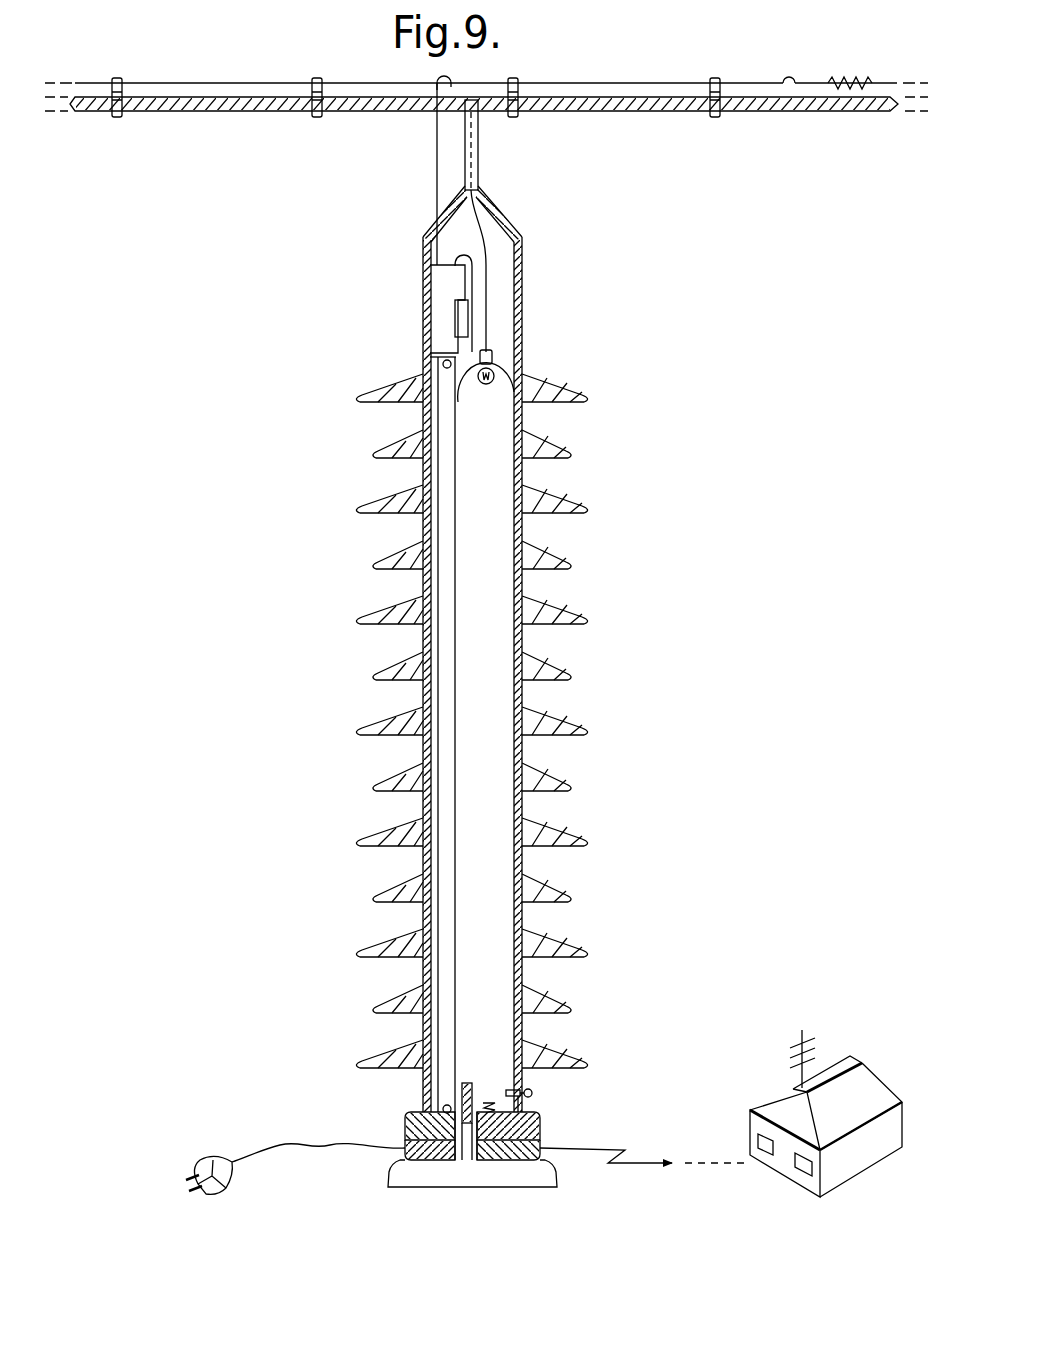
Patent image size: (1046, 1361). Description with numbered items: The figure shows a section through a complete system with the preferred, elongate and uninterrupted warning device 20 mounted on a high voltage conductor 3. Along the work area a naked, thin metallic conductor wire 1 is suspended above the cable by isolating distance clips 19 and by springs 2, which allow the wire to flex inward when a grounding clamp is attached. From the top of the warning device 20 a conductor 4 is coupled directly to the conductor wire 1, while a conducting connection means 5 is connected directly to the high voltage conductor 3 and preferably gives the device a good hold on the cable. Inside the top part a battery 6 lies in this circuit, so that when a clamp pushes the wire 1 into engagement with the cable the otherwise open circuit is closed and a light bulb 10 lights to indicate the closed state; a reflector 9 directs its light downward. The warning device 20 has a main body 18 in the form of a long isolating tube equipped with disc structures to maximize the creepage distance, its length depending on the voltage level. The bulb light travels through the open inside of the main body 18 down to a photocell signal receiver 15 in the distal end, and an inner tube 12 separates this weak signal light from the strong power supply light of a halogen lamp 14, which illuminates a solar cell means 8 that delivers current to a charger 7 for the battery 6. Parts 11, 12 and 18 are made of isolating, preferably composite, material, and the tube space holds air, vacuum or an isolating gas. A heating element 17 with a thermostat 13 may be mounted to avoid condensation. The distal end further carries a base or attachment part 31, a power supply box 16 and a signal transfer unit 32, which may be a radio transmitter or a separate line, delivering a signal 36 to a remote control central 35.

The conductor wire 1 is at (636, 83).
The spring 2 is at (838, 77).
The high voltage conductor 3 is at (172, 113).
The conductor 4 is at (435, 123).
The conducting connection means 5 is at (479, 125).
The battery 6 is at (430, 290).
The charger 7 is at (455, 315).
The solar cell means 8 is at (415, 366).
The reflector 9 is at (495, 358).
The light bulb 10 is at (520, 392).
The part 11 is at (595, 720).
The tube 12 is at (440, 863).
The thermostat 13 is at (533, 1094).
The halogen lamp 14 is at (408, 1120).
The signal receiver 15 is at (540, 1130).
The power supply box 16 is at (413, 1150).
The heating element 17 is at (468, 1123).
The main body 18 is at (522, 582).
The isolating distance clip 19 is at (722, 103).
The warning device 20 is at (372, 583).
The base or attachment part 31 is at (538, 1180).
The signal transfer unit 32 is at (508, 1150).
The remote control central 35 is at (852, 1160).
The signal 36 is at (622, 1150).